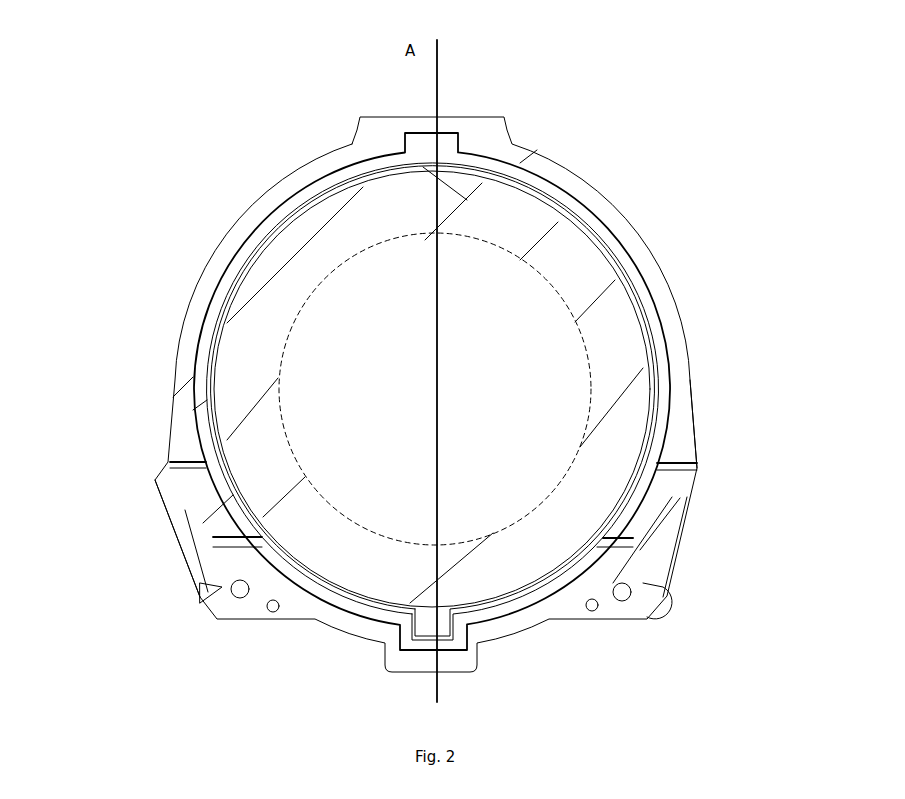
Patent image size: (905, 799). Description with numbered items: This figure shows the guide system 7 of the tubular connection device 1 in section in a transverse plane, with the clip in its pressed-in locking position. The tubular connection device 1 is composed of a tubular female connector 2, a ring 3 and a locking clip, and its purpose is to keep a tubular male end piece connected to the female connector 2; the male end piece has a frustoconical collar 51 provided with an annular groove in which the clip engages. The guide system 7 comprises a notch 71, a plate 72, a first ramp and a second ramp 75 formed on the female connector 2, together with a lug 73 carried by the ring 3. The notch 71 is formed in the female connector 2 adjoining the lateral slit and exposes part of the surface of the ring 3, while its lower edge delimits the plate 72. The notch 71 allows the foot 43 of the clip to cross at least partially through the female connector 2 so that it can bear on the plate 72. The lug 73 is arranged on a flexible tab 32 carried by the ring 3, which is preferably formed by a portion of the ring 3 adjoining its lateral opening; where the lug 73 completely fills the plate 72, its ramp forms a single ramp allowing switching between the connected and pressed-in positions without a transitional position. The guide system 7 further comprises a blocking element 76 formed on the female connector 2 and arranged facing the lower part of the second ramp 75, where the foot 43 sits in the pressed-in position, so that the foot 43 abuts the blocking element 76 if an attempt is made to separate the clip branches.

The tubular connection device 1 is at (270, 152).
The tubular female connector 2 is at (548, 175).
The ring 3 is at (602, 242).
The flexible tab 32 is at (662, 385).
The frustoconical collar 51 is at (282, 287).
The guide system 7 is at (130, 465).
The notch 71 is at (213, 540).
The plate 72 is at (625, 525).
The lug 73 is at (672, 498).
The second ramp 75 is at (640, 553).
The blocking element 76 is at (652, 600).
The foot 43 is at (640, 607).